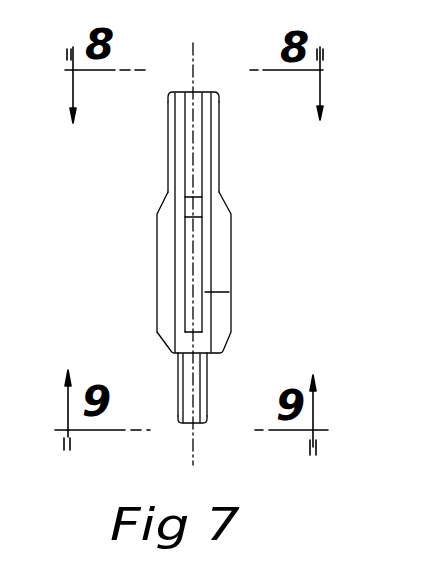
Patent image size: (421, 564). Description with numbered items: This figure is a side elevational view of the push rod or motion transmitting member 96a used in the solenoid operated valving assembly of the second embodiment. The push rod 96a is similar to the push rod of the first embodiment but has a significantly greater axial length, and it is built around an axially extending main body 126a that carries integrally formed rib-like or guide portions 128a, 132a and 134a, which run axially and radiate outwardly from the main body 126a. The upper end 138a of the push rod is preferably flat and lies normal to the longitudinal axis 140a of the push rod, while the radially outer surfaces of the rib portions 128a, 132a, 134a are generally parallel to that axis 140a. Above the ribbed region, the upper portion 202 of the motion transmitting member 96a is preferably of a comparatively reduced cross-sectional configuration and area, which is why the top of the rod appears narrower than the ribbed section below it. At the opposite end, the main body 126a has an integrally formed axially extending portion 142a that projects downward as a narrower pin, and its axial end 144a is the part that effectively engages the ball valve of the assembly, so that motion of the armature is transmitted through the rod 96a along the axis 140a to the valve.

The push rod or motion transmitting member 96a is at (272, 228).
The main body 126a is at (178, 276).
The rib-like or guide portion 128a is at (157, 243).
The rib-like or guide portion 132a is at (231, 232).
The rib-like or guide portion 134a is at (228, 292).
The upper end 138a is at (204, 91).
The axis 140a is at (191, 70).
The axially extending portion 142a is at (208, 384).
The axial end 144a is at (188, 425).
The upper portion 202 is at (220, 128).